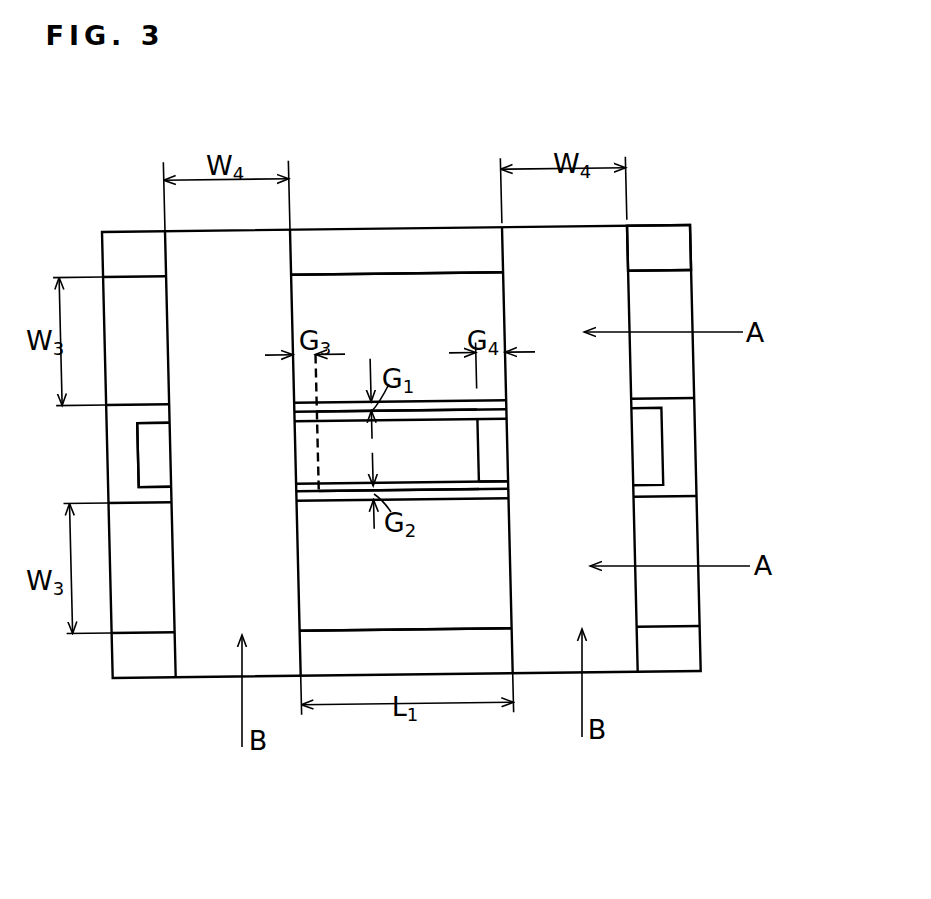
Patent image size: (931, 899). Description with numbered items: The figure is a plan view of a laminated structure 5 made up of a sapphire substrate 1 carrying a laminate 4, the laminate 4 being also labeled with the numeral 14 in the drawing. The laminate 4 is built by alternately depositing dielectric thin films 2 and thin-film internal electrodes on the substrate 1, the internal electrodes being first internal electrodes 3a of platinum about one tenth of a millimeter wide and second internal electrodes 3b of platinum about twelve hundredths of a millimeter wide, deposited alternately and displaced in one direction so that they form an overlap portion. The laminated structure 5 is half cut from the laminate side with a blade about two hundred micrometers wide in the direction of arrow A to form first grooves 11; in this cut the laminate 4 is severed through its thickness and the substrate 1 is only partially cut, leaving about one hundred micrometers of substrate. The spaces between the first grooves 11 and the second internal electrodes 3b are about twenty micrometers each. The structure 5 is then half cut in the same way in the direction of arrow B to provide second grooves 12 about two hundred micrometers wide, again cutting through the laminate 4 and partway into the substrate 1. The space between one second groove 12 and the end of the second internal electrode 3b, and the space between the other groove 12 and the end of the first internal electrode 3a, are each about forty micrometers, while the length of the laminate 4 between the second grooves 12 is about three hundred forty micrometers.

The sapphire substrate 1 is at (695, 388).
The dielectric thin film 2 is at (493, 462).
The first internal electrode 3a is at (145, 422).
The second internal electrode 3b is at (485, 488).
The laminate 4 is at (342, 512).
The electrode strip 14 is at (401, 505).
The laminated structure 5 is at (705, 237).
The first groove 11 is at (410, 298).
The second groove 12 is at (197, 450).